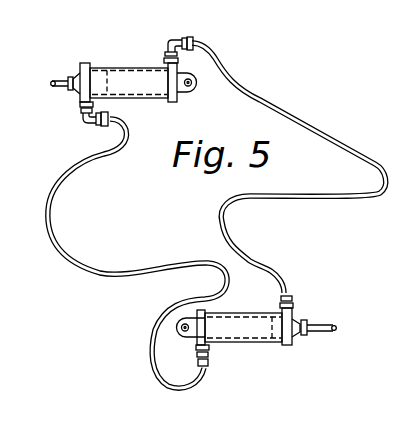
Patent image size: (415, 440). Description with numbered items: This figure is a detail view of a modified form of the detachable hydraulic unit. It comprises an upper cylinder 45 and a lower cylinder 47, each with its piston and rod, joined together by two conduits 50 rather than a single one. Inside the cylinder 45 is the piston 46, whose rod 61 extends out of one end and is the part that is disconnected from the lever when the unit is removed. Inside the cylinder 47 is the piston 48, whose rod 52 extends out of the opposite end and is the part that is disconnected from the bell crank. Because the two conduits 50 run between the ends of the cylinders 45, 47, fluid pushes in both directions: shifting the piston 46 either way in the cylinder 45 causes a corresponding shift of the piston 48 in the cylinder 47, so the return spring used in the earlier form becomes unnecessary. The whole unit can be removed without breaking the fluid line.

The cylinder 45 is at (142, 58).
The piston 46 is at (98, 74).
The cylinder 47 is at (243, 343).
The piston 48 is at (278, 347).
The conduit 50 is at (111, 153).
The rod 52 is at (323, 323).
The rod 61 is at (54, 80).